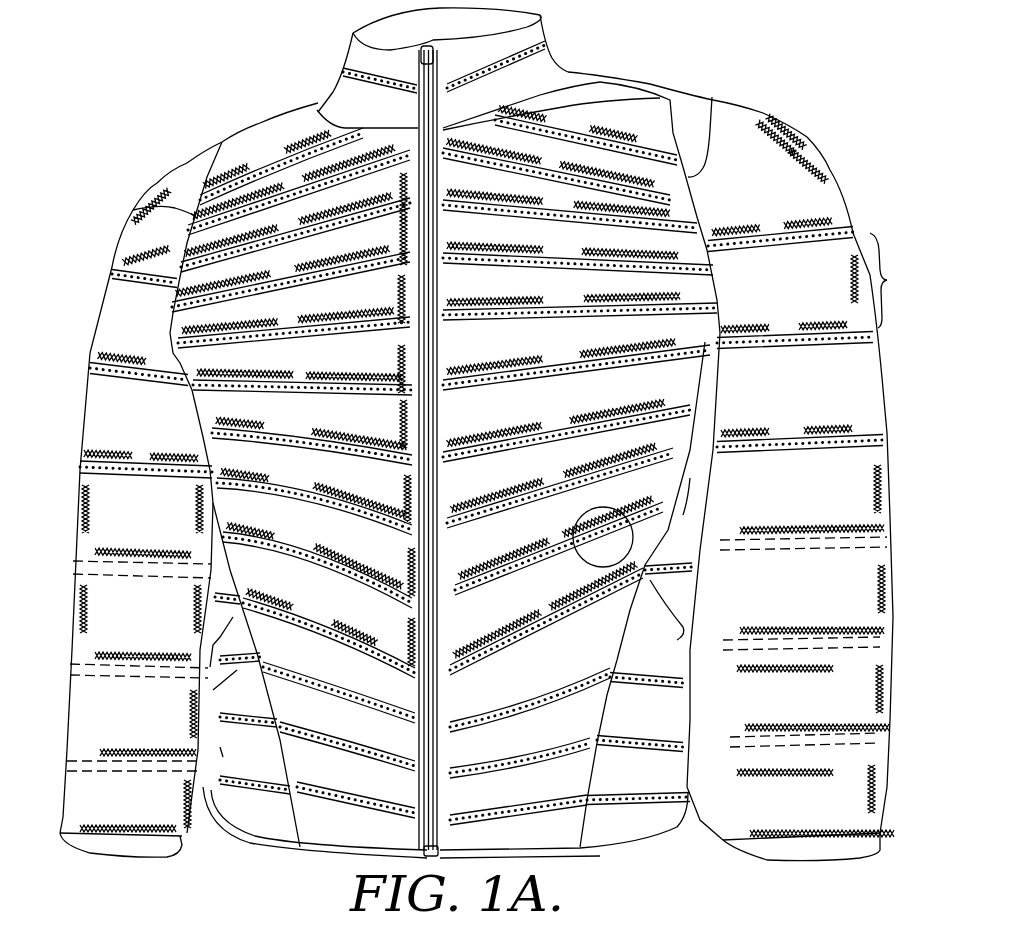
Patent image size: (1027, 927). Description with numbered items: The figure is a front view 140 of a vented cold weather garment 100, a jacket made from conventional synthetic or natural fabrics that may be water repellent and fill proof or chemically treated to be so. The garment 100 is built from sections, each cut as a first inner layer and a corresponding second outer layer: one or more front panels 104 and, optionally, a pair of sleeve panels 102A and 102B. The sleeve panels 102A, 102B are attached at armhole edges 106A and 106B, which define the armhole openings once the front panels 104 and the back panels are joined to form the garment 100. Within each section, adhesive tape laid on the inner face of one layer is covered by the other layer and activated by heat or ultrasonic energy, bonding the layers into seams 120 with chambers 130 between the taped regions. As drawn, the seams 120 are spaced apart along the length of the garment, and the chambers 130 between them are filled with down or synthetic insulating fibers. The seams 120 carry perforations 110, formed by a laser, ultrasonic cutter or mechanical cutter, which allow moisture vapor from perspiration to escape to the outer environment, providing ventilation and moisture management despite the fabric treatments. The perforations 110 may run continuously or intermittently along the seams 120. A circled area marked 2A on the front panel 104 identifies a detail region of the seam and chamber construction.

The vented cold weather garment 100 is at (491, 433).
The sleeve panel 102A is at (121, 499).
The sleeve panel 102B is at (760, 463).
The front panel 104 is at (580, 197).
The armhole edge 106A is at (147, 208).
The armhole edge 106B is at (712, 100).
The perforations 110 is at (823, 233).
The seams 120 is at (847, 229).
The chambers 130 is at (887, 279).
The front view 140 is at (216, 104).
The detail region shown in FIG. 2A is at (594, 567).